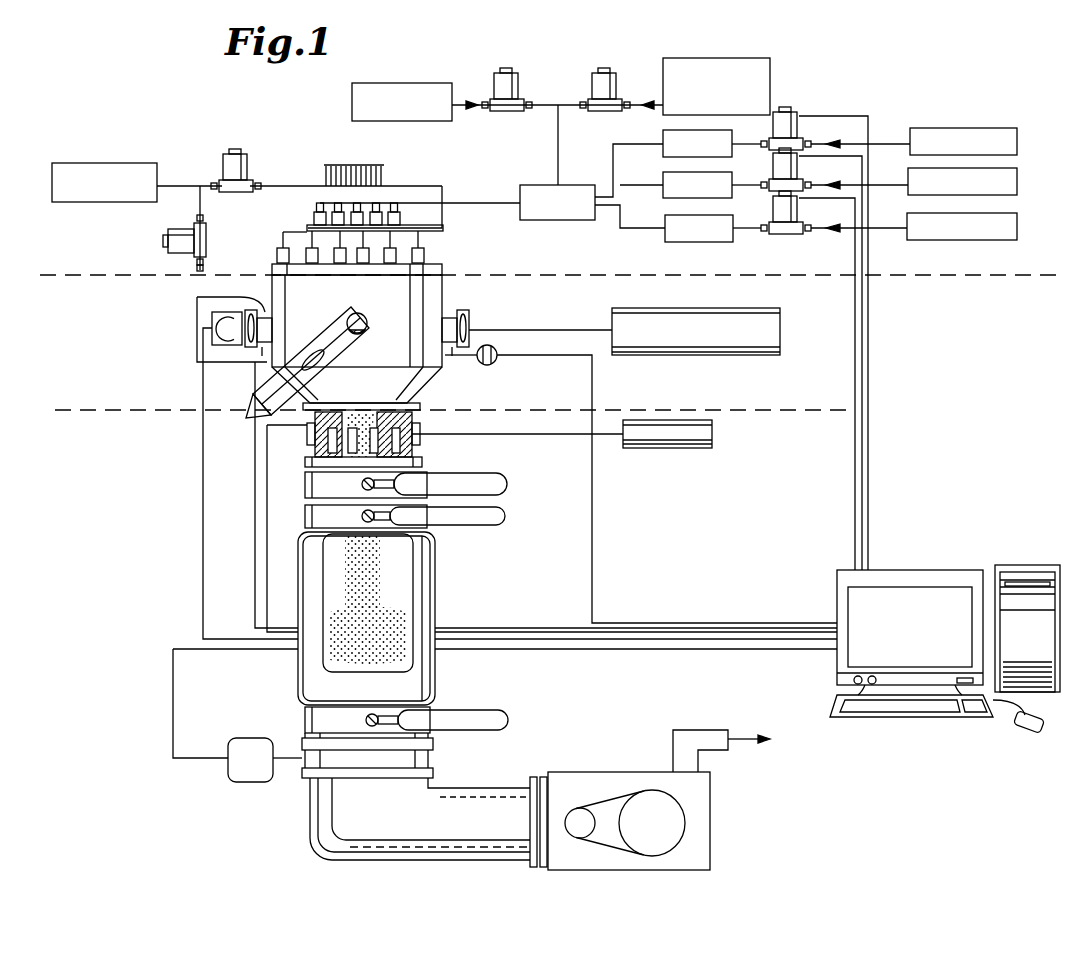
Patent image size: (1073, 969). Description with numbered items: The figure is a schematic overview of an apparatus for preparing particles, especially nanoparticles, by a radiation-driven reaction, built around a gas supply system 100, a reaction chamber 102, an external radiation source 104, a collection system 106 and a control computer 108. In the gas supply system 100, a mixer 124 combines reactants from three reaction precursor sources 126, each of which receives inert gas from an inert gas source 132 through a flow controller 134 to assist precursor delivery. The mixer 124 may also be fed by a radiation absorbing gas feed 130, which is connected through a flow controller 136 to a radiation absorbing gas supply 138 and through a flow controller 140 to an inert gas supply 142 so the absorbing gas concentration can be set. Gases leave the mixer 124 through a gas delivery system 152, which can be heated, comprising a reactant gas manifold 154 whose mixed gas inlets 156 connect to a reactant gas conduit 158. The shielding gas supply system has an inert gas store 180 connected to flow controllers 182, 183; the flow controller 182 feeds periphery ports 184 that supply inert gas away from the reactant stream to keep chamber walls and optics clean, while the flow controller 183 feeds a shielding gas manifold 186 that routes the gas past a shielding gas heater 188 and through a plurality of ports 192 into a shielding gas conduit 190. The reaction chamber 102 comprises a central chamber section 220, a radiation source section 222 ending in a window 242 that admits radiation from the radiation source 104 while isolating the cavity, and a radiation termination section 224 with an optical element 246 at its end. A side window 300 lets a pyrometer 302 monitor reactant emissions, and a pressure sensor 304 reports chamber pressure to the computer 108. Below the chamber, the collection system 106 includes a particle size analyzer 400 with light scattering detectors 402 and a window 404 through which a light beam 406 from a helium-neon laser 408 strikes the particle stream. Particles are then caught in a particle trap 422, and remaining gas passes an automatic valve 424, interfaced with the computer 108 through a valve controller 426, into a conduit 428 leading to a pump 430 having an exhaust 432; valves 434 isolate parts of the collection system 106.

The gas supply system 100 is at (492, 171).
The reaction chamber 102 is at (180, 323).
The external radiation source 104 is at (722, 355).
The collection system 106 is at (543, 571).
The control computer 108 is at (929, 562).
The mixer 124 is at (560, 220).
The reaction precursor sources 126 is at (663, 158).
The radiation absorbing gas feed 130 is at (558, 150).
The inert gas source 132 is at (1017, 150).
The flow controller 134 is at (800, 115).
The flow controller 136 is at (596, 72).
The radiation absorbing gas supply 138 is at (772, 82).
The flow controller 140 is at (498, 72).
The inert gas supply 142 is at (352, 95).
The gas delivery system 152 is at (430, 237).
The reactant gas manifold 154 is at (308, 227).
The mixed gas inlets 156 is at (356, 210).
The reactant gas conduit 158 is at (300, 236).
The inert gas store 180 is at (100, 203).
The flow controller 182 is at (168, 255).
The flow controller 183 is at (228, 158).
The periphery ports 184 is at (262, 352).
The shielding gas manifold 186 is at (270, 186).
The shielding gas heater 188 is at (383, 172).
The shielding gas conduit 190 is at (275, 268).
The ports 192 is at (340, 250).
The central chamber section 220 is at (443, 290).
The radiation source section 222 is at (470, 312).
The radiation termination section 224 is at (197, 297).
The window 242 is at (480, 346).
The optical element 246 is at (240, 348).
The window 300 is at (372, 322).
The pyrometer 302 is at (258, 396).
The pressure sensor 304 is at (492, 365).
The particle size analyzer 400 is at (438, 458).
The light scattering detectors 402 is at (350, 432).
The window 404 is at (470, 432).
The light beam 406 is at (545, 434).
The helium-neon laser 408 is at (672, 448).
The particle trap 422 is at (435, 598).
The automatic valve 424 is at (433, 758).
The valve controller 426 is at (228, 778).
The conduit 428 is at (462, 790).
The pump 430 is at (590, 772).
The exhaust 432 is at (715, 730).
The valves 434 is at (507, 484).